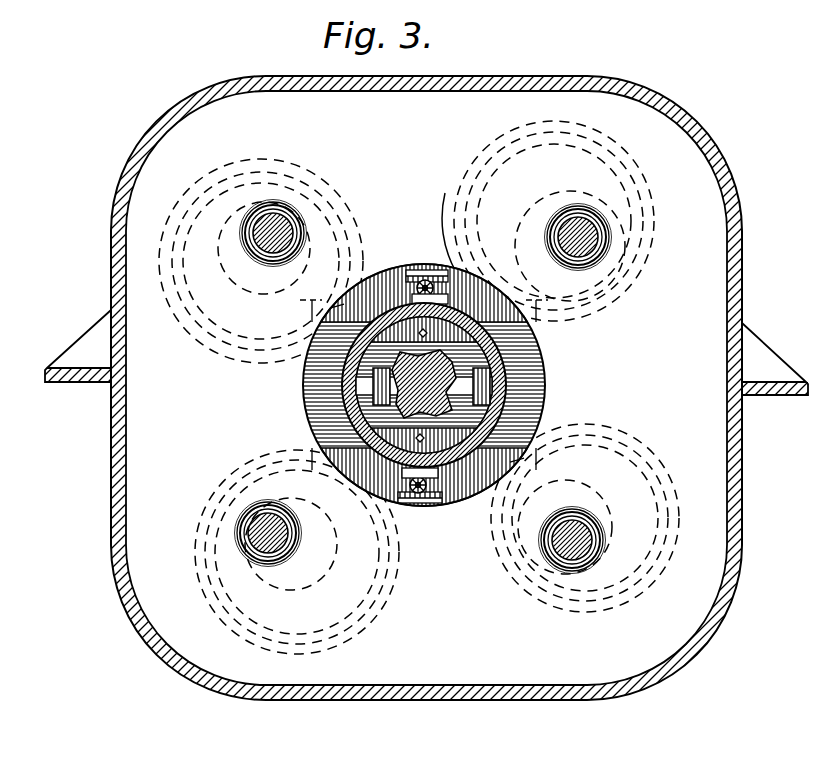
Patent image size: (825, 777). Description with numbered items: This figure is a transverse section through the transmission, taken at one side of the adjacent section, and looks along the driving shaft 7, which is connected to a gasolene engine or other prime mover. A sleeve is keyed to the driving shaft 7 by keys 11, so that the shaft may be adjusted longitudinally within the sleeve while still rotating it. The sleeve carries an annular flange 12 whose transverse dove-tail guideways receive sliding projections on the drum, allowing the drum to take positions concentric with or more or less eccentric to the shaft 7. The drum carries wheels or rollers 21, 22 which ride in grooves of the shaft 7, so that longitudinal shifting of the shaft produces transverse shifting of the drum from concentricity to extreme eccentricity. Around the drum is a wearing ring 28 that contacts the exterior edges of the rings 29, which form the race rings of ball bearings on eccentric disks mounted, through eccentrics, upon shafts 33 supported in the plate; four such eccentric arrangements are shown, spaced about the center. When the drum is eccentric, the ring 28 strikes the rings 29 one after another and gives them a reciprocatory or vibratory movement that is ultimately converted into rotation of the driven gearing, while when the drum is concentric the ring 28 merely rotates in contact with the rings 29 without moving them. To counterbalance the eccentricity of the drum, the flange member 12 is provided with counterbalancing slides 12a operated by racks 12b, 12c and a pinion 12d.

The driving shaft 7 is at (742, 293).
The keys 11 is at (449, 418).
The annular flange 12 is at (424, 385).
The counterbalancing slides 12a is at (458, 276).
The rack 12b is at (425, 268).
The rack 12c is at (396, 304).
The pinion 12d is at (414, 276).
The wheel or roller 21 is at (545, 372).
The wheel or roller 22 is at (304, 389).
The wearing ring 28 is at (548, 392).
The rings 29 is at (607, 312).
The shafts 33 is at (300, 226).